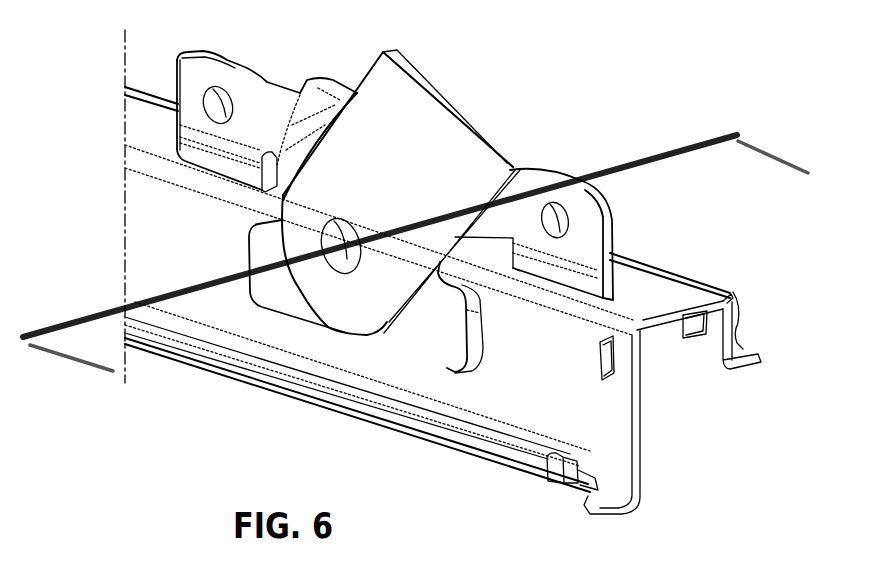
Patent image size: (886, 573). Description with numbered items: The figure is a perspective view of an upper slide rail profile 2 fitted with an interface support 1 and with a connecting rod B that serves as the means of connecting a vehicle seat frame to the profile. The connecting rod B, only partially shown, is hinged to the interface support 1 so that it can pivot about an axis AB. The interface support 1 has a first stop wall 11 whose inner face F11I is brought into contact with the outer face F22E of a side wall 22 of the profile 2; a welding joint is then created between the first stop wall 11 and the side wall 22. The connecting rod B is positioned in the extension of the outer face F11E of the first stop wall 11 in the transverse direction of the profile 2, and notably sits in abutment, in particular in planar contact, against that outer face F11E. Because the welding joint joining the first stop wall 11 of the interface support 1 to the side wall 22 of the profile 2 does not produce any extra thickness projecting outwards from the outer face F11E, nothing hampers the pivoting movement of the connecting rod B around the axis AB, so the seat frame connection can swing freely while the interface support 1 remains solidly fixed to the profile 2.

The connecting rod B is at (460, 82).
The interface support 1 is at (398, 274).
The profile 2 is at (443, 309).
The side wall 22 is at (637, 405).
The first stop wall 11 is at (449, 338).
The inner face F11I is at (490, 338).
The outer face F11E is at (430, 322).
The outer face F22E is at (537, 372).
The axis AB is at (193, 283).